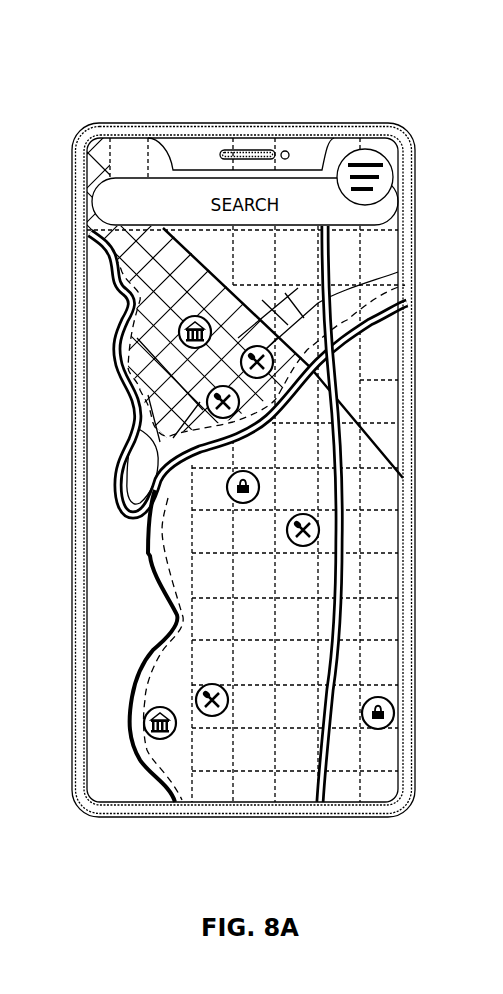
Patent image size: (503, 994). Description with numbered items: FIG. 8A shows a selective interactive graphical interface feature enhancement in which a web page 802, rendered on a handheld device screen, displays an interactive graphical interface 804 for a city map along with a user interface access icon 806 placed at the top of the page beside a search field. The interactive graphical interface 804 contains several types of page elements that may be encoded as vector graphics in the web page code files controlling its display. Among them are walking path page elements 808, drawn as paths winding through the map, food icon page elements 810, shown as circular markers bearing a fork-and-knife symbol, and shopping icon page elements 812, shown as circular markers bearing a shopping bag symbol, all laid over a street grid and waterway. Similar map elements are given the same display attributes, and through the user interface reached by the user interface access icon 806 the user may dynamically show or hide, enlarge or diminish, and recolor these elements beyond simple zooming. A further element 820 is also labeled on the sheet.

The web page 802 is at (133, 161).
The interactive graphical interface 804 is at (432, 147).
The user interface access icon 806 is at (399, 164).
The walking path page elements 808 is at (146, 680).
The food icon page elements 810 is at (202, 716).
The shopping icon page elements 812 is at (227, 487).
The map user interface 820 is at (411, 514).